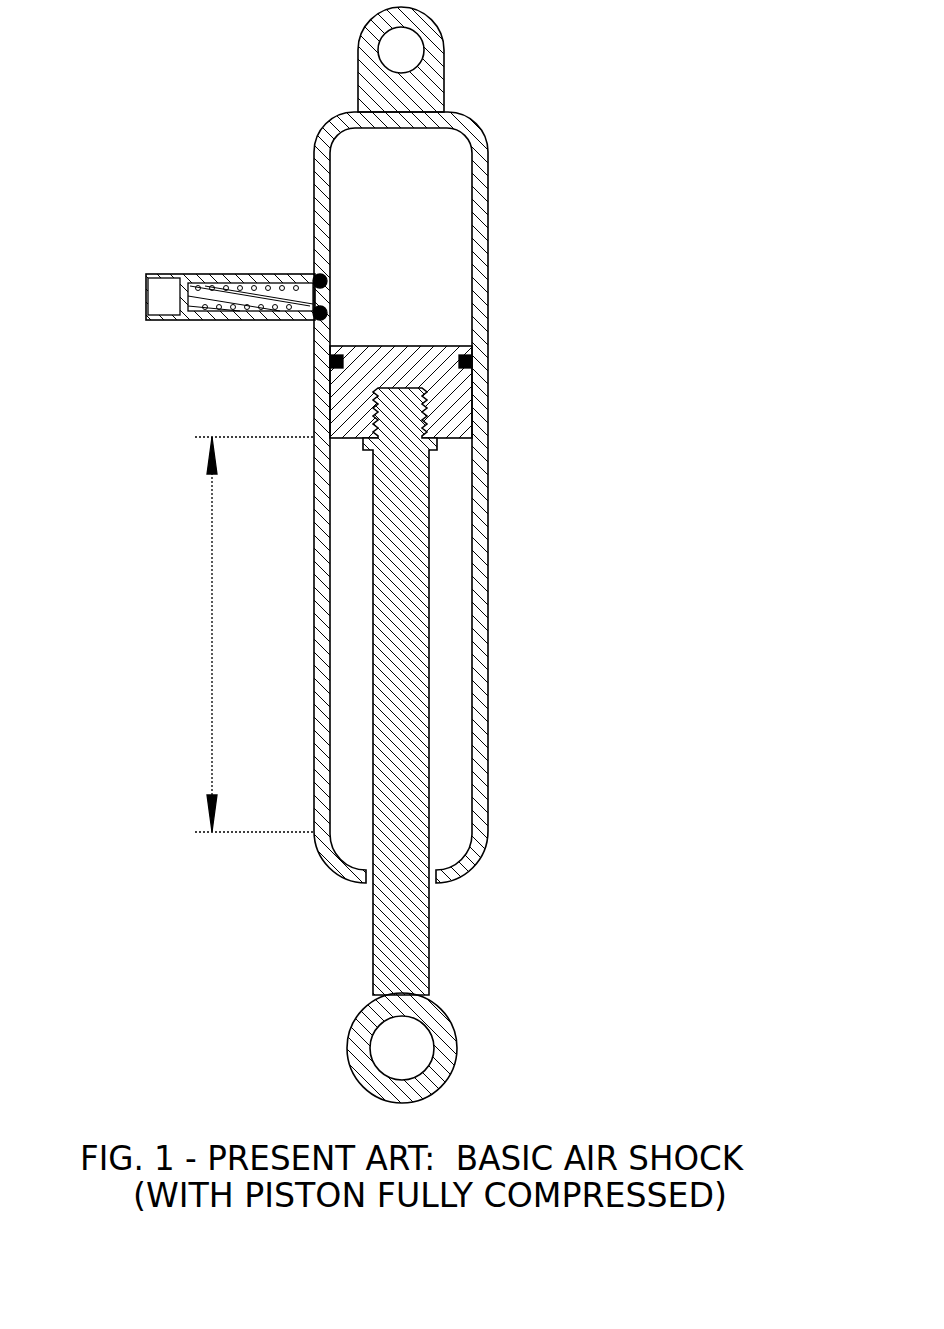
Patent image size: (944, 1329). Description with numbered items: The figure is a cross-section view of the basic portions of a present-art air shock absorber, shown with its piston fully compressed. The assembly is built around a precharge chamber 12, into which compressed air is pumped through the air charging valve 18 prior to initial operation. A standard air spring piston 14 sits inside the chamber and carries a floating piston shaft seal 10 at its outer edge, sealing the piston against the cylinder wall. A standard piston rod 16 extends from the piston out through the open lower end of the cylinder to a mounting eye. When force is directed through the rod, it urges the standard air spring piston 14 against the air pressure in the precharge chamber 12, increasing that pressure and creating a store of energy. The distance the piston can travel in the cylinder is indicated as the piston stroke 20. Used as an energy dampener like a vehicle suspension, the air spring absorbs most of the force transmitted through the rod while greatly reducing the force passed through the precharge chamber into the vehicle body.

The floating piston shaft seal 10 is at (472, 355).
The precharge chamber 12 is at (410, 198).
The standard air spring piston 14 is at (448, 392).
The standard piston rod 16 is at (403, 617).
The air charging valve 18 is at (257, 300).
The piston stroke 20 is at (209, 568).